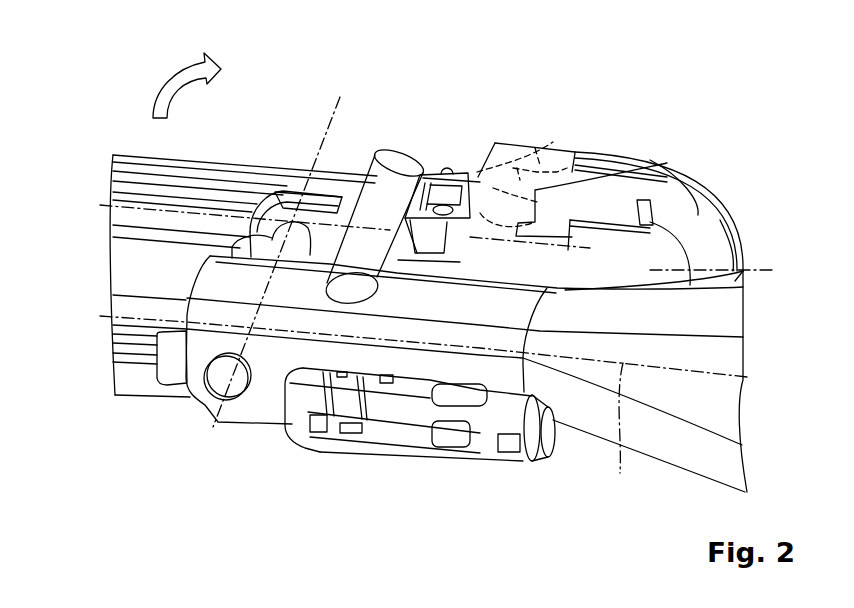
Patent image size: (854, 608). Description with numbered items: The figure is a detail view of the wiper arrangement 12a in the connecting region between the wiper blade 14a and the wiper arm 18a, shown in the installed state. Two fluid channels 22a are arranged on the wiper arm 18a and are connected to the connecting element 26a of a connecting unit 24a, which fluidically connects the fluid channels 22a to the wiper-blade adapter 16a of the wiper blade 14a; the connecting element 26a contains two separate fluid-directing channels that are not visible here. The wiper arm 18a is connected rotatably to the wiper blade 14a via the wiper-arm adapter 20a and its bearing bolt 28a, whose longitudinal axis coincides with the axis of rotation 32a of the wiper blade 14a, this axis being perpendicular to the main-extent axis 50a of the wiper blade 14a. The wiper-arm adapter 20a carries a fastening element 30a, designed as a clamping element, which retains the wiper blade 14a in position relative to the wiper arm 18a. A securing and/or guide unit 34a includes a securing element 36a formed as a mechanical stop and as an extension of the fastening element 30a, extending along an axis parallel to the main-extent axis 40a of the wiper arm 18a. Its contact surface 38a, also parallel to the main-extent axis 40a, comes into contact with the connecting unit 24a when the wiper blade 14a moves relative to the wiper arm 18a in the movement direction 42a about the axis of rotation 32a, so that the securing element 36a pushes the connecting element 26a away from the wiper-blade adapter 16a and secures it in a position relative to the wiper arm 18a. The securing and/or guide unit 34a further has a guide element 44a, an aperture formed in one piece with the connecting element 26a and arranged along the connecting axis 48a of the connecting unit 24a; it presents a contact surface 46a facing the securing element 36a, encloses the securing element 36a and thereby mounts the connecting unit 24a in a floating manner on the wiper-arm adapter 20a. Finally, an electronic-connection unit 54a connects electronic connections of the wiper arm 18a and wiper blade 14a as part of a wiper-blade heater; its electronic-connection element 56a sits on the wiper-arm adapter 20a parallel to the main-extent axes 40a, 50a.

The wiper arrangement 12a is at (129, 72).
The wiper blade 14a is at (116, 184).
The wiper-blade adapter 16a is at (303, 191).
The wiper arm 18a is at (747, 409).
The wiper-arm adapter 20a is at (253, 411).
The fluid channels 22a is at (695, 210).
The connecting unit 24a is at (633, 151).
The connecting element 26a is at (645, 170).
The bearing bolt 28a is at (213, 383).
The fastening element 30a is at (390, 187).
The axis of rotation 32a is at (283, 247).
The securing and/or guide unit 34a is at (489, 125).
The securing element 36a is at (433, 180).
The contact surface 38a is at (483, 212).
The main-extent axis 40a is at (623, 432).
The movement direction 42a is at (177, 77).
The guide element 44a is at (517, 168).
The contact surface 46a is at (480, 200).
The connecting axis 48a is at (480, 453).
The main-extent axis 50a is at (745, 287).
The electronic-connection unit 54a is at (407, 460).
The electronic-connection element 56a is at (368, 433).